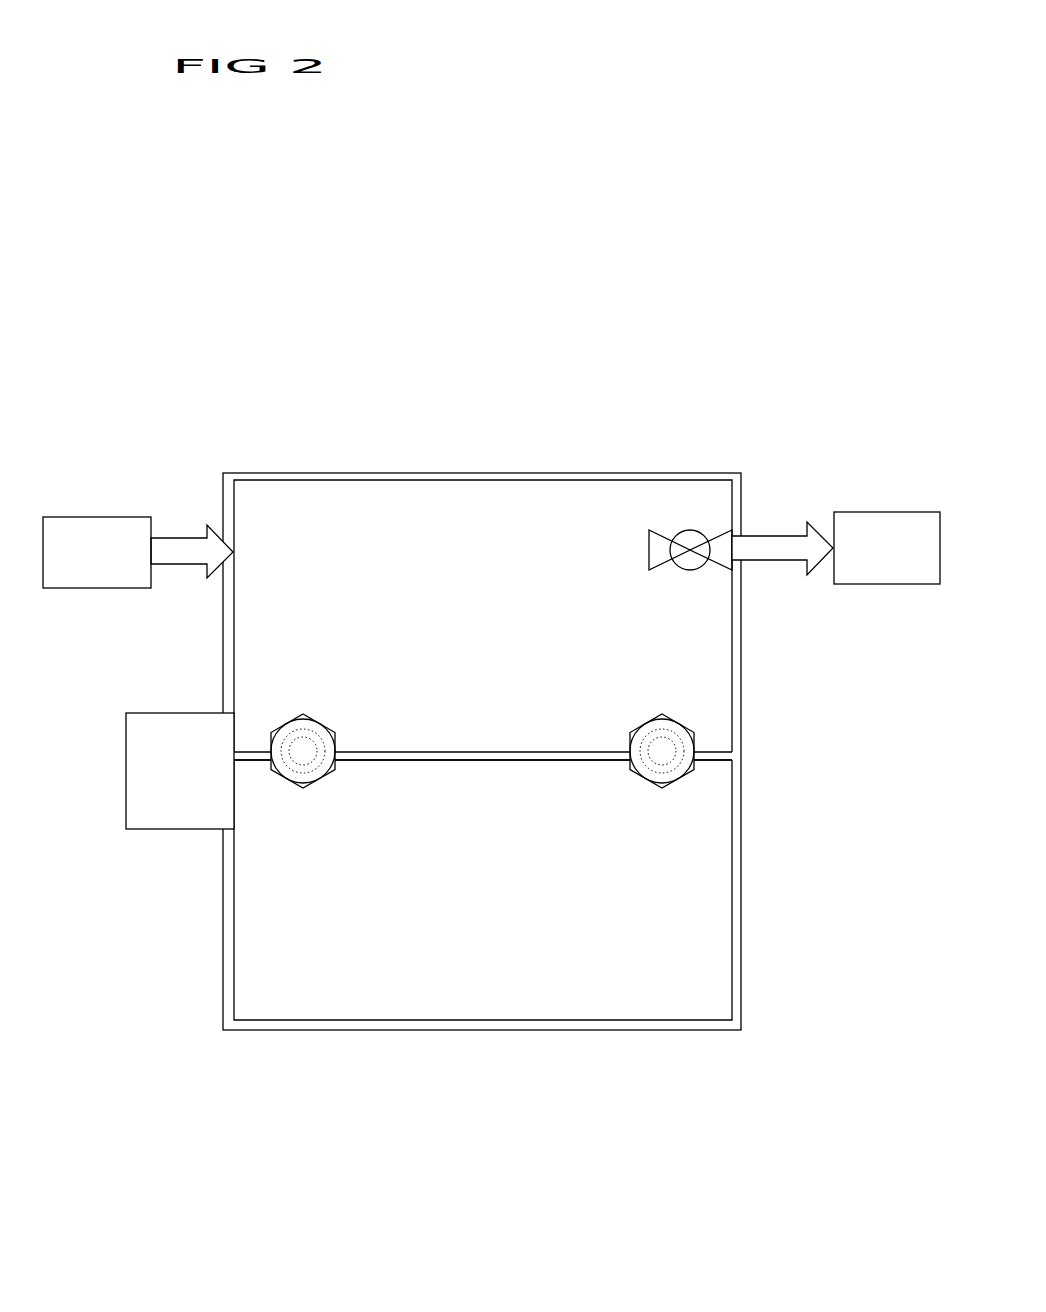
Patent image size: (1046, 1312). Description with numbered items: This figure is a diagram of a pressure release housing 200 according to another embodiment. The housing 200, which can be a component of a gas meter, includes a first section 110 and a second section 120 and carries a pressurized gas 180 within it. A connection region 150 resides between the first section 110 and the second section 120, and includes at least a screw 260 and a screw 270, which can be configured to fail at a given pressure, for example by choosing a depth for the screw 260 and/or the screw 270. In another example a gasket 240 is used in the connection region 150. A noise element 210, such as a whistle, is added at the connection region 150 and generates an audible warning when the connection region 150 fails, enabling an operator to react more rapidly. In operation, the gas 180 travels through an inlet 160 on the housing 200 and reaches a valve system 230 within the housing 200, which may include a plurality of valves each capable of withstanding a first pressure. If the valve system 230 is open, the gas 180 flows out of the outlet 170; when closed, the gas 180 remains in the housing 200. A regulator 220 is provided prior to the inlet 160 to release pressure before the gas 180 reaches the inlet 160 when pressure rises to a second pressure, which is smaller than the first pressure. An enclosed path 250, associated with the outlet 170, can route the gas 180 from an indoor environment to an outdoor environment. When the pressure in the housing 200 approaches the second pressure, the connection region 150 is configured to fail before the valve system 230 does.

The first section 110 is at (485, 545).
The second section 120 is at (505, 978).
The connection region 150 is at (742, 748).
The inlet 160 is at (192, 524).
The outlet 170 is at (782, 525).
The pressurized gas 180 is at (546, 925).
The pressure release housing 200 is at (537, 474).
The noise element 210 is at (180, 771).
The regulator 220 is at (123, 670).
The valve system 230 is at (690, 592).
The gasket 240 is at (488, 764).
The enclosed path 250 is at (840, 395).
The screw 260 is at (303, 792).
The screw 270 is at (662, 792).